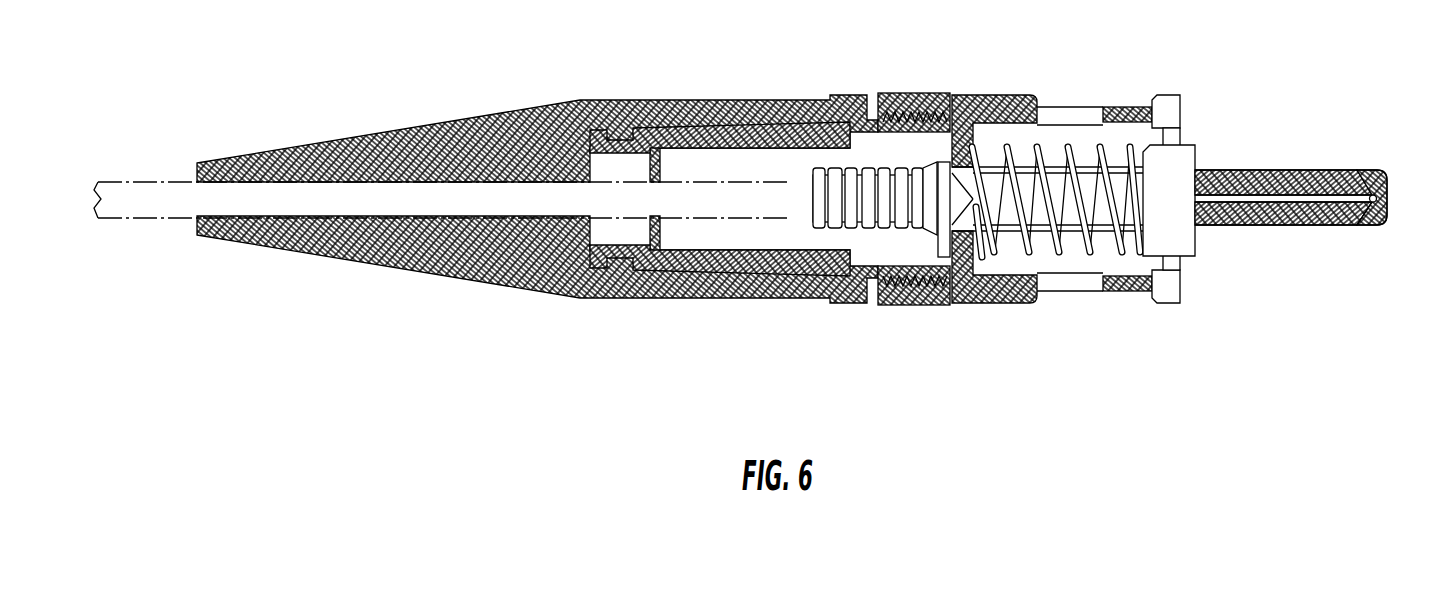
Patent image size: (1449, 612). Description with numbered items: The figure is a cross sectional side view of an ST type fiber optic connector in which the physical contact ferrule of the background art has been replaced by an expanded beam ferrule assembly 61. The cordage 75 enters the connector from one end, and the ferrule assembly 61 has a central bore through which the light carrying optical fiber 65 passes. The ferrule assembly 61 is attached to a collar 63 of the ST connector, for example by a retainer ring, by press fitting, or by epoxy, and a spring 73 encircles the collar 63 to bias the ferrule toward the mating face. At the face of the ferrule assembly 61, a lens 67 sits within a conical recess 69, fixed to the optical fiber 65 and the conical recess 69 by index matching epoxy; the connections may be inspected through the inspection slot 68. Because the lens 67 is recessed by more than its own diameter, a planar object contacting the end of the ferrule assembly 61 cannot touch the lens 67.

The expanded beam ferrule assembly 61 is at (1267, 133).
The collar 63 is at (1177, 168).
The optical fiber 65 is at (1223, 200).
The lens 67 is at (1383, 197).
The inspection slot 68 is at (1367, 185).
The conical recess 69 is at (1385, 207).
The spring 73 is at (1040, 150).
The cordage 75 is at (141, 205).